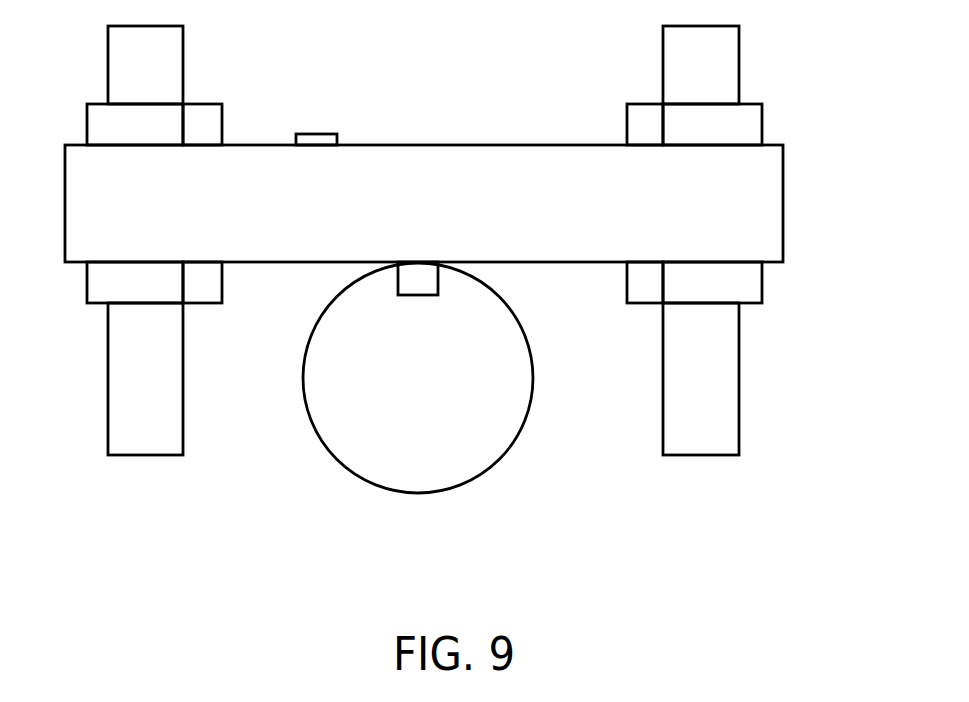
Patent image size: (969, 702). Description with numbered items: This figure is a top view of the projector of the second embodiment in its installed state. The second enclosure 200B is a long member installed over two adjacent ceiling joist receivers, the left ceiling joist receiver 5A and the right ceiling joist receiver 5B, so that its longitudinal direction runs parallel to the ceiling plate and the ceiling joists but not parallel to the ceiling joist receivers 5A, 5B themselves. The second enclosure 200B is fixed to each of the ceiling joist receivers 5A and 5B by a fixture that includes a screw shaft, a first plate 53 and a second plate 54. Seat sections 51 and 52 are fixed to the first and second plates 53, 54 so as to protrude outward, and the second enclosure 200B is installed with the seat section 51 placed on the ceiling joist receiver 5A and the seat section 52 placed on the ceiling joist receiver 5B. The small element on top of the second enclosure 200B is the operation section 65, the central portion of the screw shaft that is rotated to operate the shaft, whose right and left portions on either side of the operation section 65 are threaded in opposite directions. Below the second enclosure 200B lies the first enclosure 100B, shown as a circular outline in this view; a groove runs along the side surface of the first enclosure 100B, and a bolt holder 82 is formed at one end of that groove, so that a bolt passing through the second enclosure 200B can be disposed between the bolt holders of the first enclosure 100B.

The second enclosure 200B is at (768, 177).
The ceiling joist receiver 5A is at (122, 365).
The ceiling joist receiver 5B is at (727, 363).
The seat section 51 is at (97, 121).
The seat section 52 is at (752, 117).
The first plate 53 is at (202, 110).
The second plate 54 is at (645, 110).
The operation section 65 is at (313, 132).
The bolt holder 82 is at (430, 280).
The first enclosure 100B is at (370, 465).